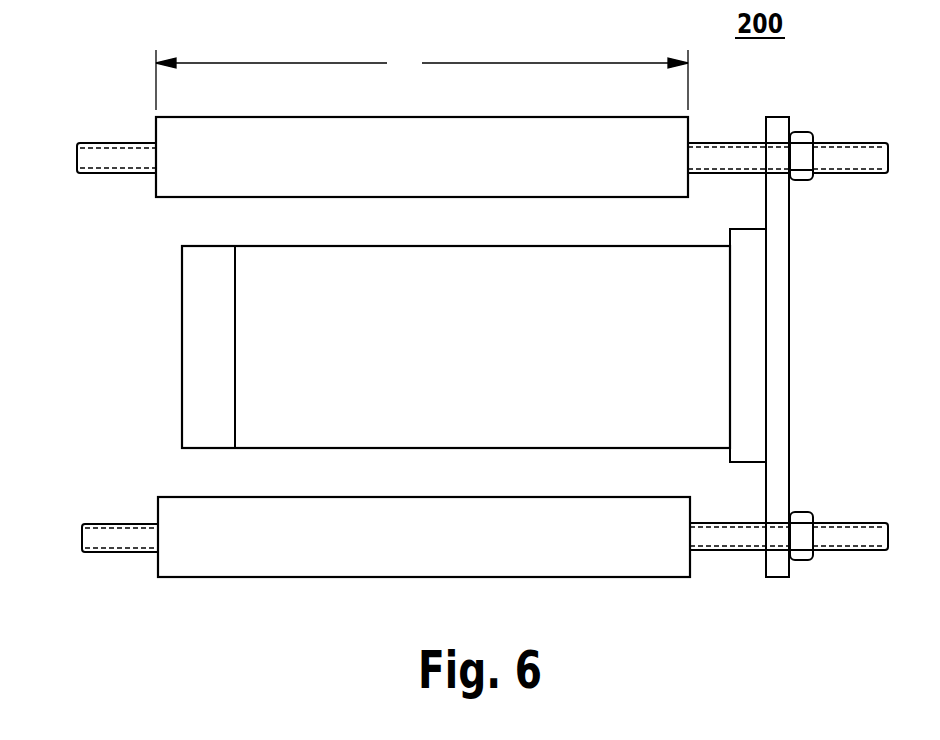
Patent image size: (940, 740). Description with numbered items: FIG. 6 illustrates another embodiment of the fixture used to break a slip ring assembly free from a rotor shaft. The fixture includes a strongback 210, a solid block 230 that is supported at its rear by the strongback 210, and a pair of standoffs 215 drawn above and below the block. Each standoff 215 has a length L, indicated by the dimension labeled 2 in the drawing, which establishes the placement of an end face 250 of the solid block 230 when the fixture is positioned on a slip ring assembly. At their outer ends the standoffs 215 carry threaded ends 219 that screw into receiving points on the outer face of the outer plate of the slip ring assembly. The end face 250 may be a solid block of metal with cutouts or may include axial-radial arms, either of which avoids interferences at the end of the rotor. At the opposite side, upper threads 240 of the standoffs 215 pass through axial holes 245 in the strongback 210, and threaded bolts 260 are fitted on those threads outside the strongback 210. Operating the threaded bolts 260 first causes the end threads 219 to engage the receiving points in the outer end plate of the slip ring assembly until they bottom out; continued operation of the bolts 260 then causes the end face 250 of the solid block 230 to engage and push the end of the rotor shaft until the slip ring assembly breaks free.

The length dimension L of roller 2 is at (412, 63).
The strongback 210 is at (790, 305).
The standoffs 215 is at (470, 117).
The threaded ends 219 is at (110, 143).
The solid block 230 is at (452, 245).
The upper threads 240 is at (860, 143).
The axial holes 245 is at (773, 140).
The end face 250 is at (204, 246).
The threaded bolts 260 is at (798, 132).